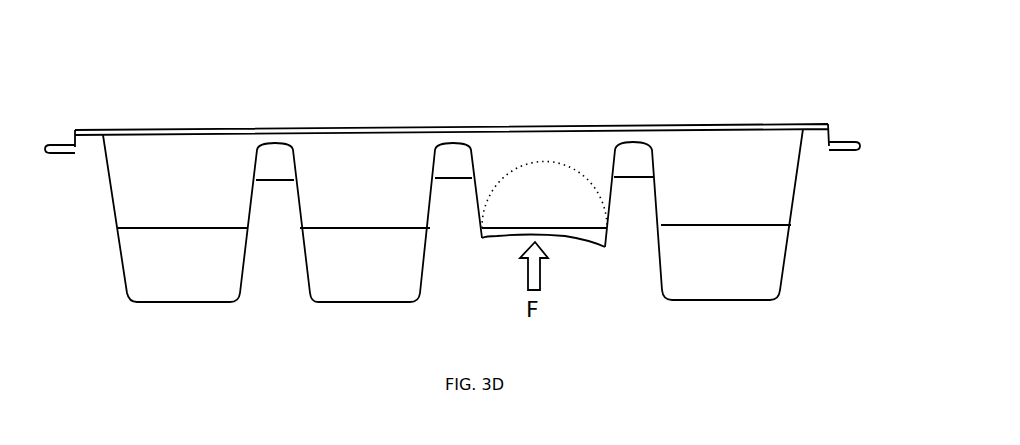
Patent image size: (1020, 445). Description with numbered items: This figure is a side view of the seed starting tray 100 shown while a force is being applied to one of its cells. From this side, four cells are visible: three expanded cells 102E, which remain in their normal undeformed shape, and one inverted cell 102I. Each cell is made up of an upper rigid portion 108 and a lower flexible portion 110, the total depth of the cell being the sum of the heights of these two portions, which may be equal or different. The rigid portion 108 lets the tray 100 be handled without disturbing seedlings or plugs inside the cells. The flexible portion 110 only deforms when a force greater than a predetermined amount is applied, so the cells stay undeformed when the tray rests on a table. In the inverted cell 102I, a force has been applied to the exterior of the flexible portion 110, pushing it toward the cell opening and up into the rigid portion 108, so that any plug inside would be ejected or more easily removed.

The seed starting tray 100 is at (714, 55).
The expanded cell 102E is at (201, 112).
The inverted cell 102I is at (566, 110).
The rigid portion 108 is at (477, 190).
The flexible portion 110 is at (493, 235).